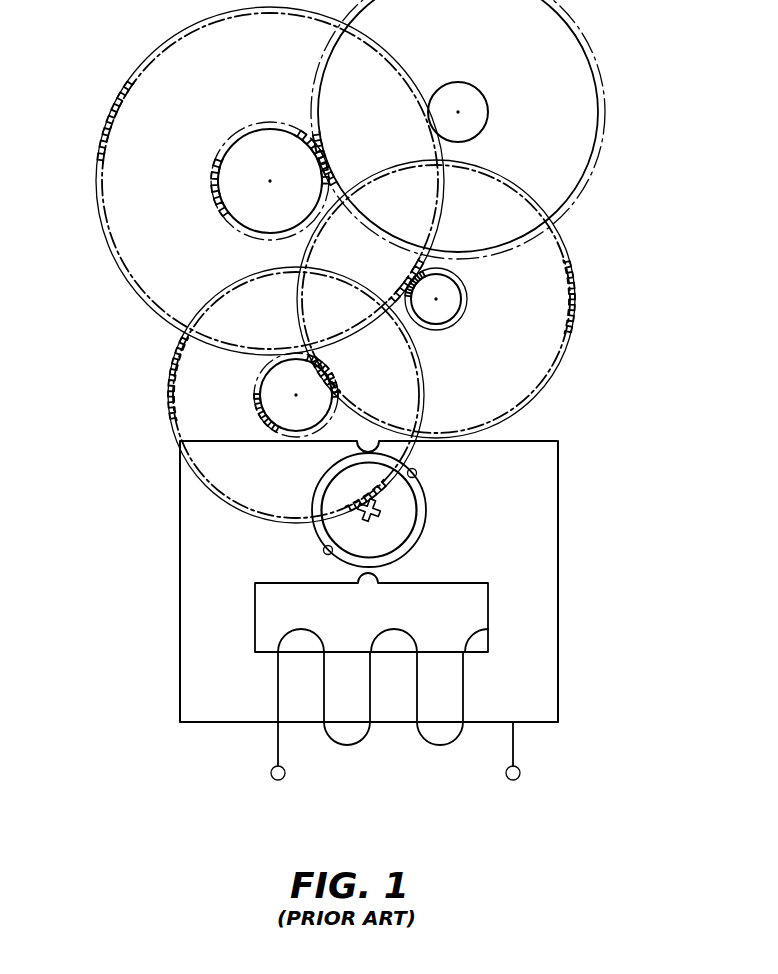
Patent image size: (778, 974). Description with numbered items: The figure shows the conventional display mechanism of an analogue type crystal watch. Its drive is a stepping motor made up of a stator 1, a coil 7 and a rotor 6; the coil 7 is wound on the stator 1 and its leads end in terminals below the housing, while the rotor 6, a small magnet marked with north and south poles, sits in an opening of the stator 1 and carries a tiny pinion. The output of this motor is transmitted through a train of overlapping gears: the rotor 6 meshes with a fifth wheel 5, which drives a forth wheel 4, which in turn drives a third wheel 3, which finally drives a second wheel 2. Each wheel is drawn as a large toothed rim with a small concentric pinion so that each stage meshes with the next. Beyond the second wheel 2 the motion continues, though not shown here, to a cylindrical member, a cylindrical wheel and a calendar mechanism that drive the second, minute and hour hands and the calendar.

The stator 1 is at (545, 482).
The second wheel 2 is at (588, 82).
The third wheel 3 is at (117, 182).
The forth wheel 4 is at (557, 242).
The fifth wheel 5 is at (183, 410).
The rotor 6 is at (345, 527).
The coil 7 is at (277, 735).